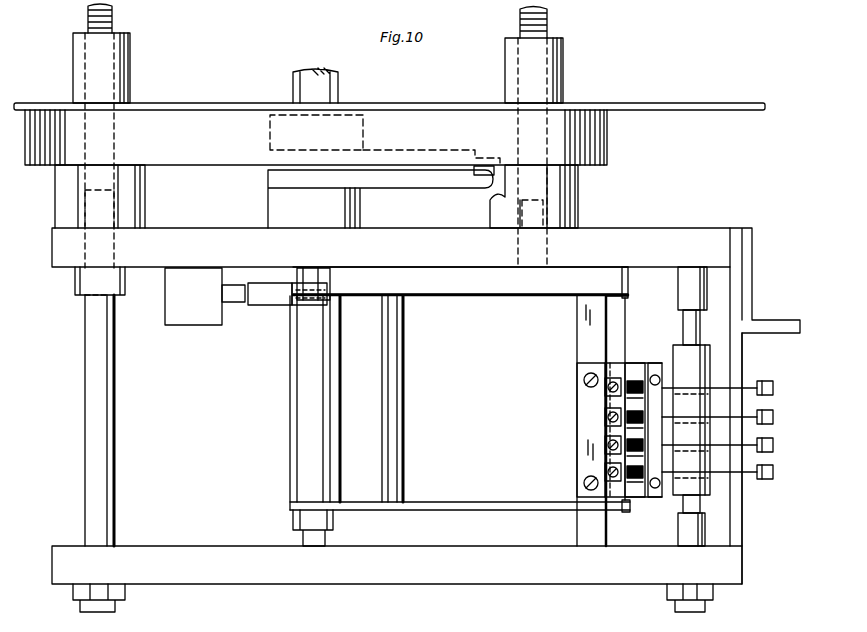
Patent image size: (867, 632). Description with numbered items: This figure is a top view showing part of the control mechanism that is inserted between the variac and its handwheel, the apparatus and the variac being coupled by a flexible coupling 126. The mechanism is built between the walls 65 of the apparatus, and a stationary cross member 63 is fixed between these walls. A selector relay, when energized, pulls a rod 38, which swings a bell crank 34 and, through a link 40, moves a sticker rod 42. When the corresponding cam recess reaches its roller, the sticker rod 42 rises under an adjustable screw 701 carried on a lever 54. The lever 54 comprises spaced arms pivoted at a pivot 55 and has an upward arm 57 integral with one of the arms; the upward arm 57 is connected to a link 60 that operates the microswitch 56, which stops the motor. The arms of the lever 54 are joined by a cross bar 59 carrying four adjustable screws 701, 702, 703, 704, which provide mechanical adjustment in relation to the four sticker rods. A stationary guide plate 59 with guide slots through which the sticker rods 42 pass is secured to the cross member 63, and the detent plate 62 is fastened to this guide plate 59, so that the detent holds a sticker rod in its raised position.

The bell crank 34 is at (750, 386).
The rod 38 is at (731, 430).
The link 40 is at (668, 395).
The sticker rod 42 is at (632, 385).
The lever 54 is at (452, 293).
The pivot 55 is at (312, 546).
The microswitch 56 is at (190, 320).
The upward arm 57 is at (290, 355).
The cross bar 59 is at (620, 320).
The link 60 is at (275, 305).
The detent plate 62 is at (645, 492).
The cross member 63 is at (575, 318).
The walls 65 is at (647, 235).
The flexible coupling 126 is at (478, 172).
The adjustable screw 701 is at (605, 472).
The adjustable screw 702 is at (605, 445).
The adjustable screw 703 is at (605, 417).
The adjustable screw 704 is at (605, 388).